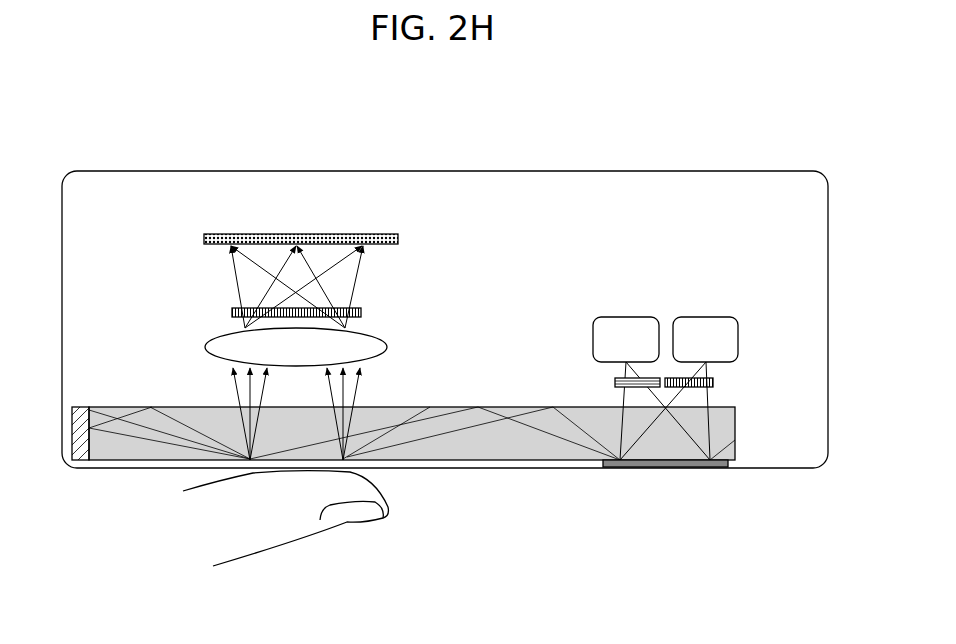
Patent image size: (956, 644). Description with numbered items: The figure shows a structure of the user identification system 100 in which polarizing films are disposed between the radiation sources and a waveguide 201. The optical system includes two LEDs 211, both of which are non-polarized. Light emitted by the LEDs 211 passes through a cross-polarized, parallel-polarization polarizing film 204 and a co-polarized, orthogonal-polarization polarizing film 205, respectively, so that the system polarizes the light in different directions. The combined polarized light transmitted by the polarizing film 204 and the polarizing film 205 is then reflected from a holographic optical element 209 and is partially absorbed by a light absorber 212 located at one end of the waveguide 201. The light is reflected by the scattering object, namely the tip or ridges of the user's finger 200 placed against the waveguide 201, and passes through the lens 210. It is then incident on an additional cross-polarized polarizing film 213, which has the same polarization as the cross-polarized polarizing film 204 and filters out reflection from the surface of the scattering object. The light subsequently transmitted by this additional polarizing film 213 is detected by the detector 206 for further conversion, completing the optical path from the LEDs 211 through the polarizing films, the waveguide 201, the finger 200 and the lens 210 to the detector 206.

The user identification system 100 is at (681, 171).
The user's finger 200 is at (267, 535).
The waveguide 201 is at (185, 422).
The cross-polarized polarizing film 204 is at (615, 378).
The co-polarized polarizing film 205 is at (715, 388).
The detector 206 is at (400, 238).
The holographic optical element 209 is at (598, 464).
The lens 210 is at (372, 343).
The LEDs 211 is at (690, 317).
The light absorber 212 is at (82, 407).
The additional cross-polarized polarizing film 213 is at (232, 308).